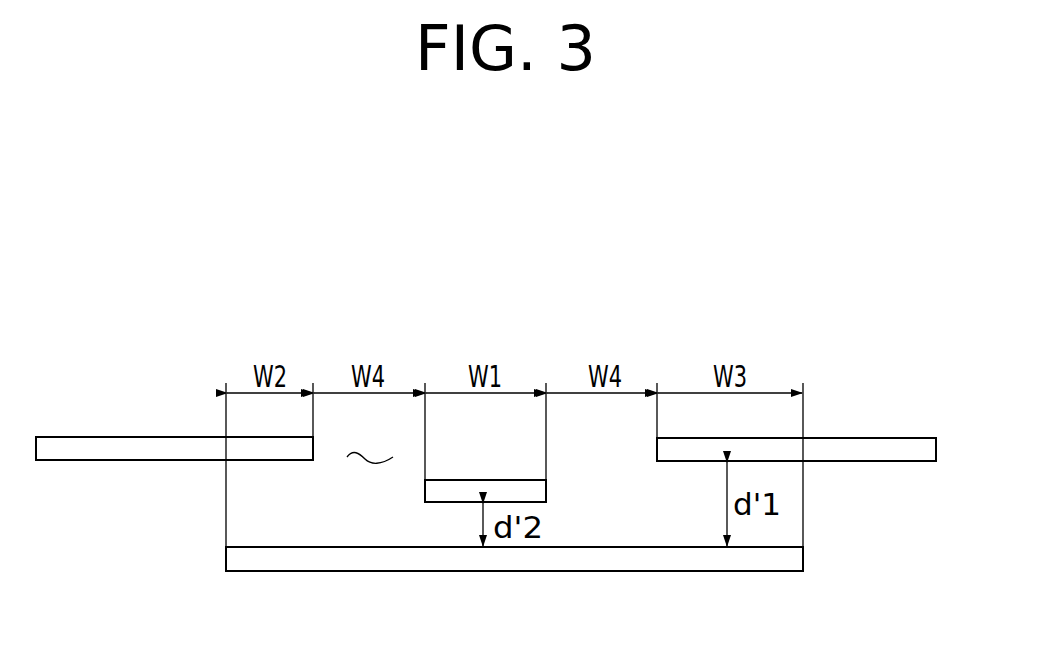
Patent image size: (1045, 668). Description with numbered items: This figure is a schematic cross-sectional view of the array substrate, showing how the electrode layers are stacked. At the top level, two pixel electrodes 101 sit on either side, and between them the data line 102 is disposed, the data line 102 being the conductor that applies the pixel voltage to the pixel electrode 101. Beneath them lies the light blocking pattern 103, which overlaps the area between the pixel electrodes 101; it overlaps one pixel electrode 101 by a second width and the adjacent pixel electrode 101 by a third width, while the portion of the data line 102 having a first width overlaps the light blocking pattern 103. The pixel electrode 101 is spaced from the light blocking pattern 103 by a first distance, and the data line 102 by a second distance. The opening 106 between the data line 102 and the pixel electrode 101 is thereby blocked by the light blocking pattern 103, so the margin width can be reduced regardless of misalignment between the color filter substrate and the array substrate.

The pixel electrode 101 is at (900, 438).
The data line 102 is at (545, 492).
The light blocking pattern 103 is at (803, 559).
The opening 106 is at (365, 460).